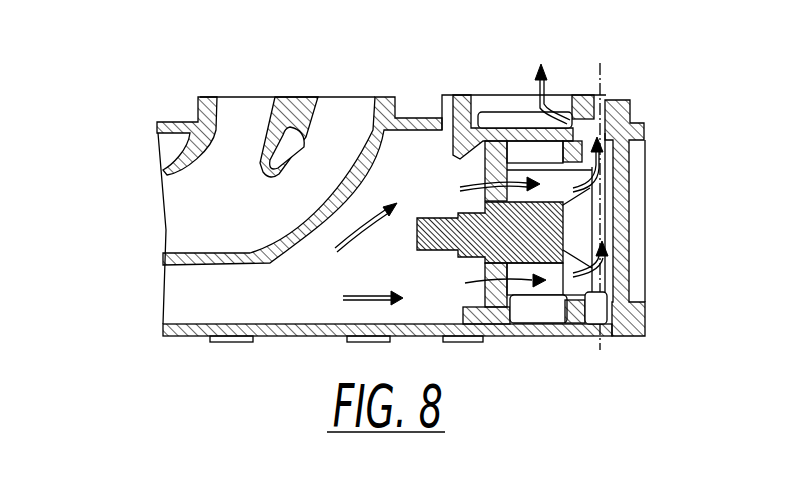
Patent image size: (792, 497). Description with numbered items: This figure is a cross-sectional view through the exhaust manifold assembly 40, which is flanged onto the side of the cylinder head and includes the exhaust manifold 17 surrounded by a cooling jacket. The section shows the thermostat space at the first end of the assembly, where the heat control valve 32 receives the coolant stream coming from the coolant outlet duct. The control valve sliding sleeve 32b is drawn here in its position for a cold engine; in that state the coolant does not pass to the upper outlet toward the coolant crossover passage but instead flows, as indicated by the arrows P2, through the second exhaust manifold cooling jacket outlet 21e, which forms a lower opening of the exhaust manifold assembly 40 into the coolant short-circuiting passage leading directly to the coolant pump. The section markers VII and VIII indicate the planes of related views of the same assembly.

The exhaust manifold 17 is at (195, 226).
The exhaust manifold assembly 40 is at (304, 96).
The second exhaust manifold cooling jacket outlet 21e is at (488, 95).
The heat control valve 32 is at (537, 231).
The control valve sliding sleeve 32b is at (543, 295).
The arrows P2 is at (553, 97).
The section VII is at (510, 62).
The section VIII is at (606, 40).